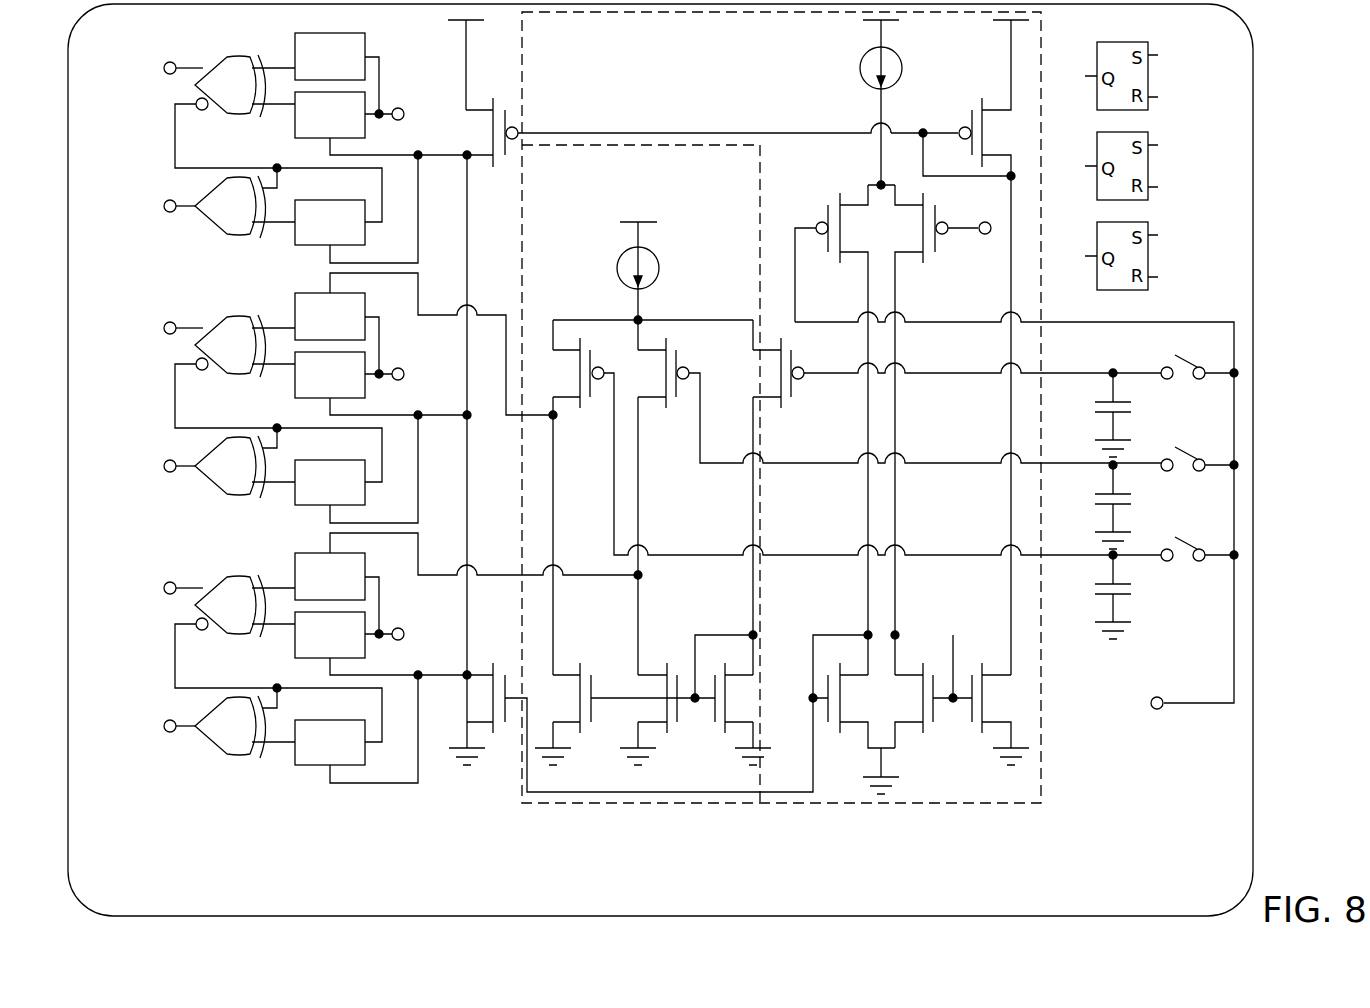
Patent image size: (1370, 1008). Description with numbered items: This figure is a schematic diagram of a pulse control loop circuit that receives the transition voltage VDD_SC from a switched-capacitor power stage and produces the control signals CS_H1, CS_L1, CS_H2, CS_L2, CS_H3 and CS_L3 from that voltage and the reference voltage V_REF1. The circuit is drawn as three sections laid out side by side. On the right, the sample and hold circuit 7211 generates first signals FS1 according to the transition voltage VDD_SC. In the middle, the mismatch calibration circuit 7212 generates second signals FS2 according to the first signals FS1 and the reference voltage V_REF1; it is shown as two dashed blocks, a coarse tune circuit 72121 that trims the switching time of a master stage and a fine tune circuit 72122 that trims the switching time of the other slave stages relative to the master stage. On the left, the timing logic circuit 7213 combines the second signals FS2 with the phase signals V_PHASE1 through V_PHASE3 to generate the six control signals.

The timing logic circuit 7213 is at (68, 842).
The mismatch calibration circuit 7212 is at (773, 445).
The coarse tune circuit 72121 is at (668, 79).
The fine tune circuit 72122 is at (668, 178).
The sample and hold circuit 7211 is at (1252, 842).